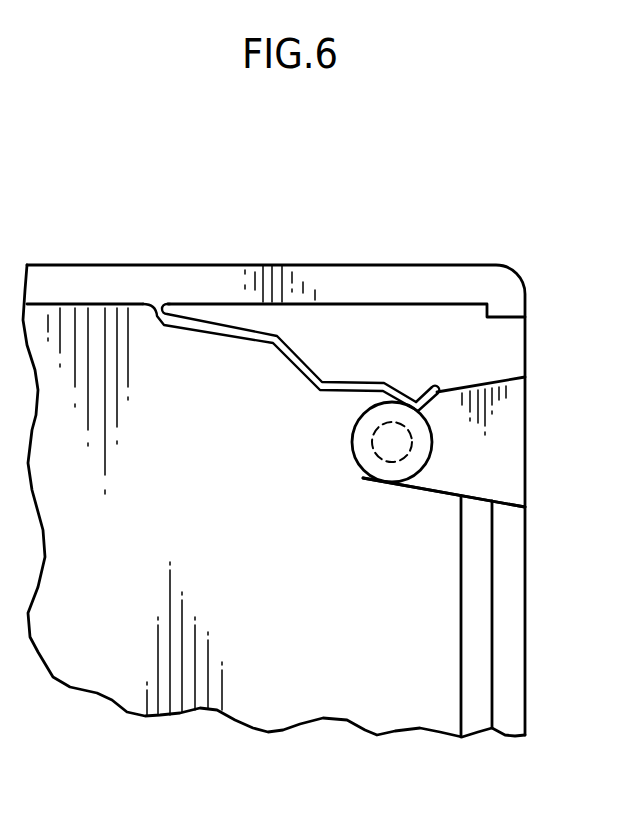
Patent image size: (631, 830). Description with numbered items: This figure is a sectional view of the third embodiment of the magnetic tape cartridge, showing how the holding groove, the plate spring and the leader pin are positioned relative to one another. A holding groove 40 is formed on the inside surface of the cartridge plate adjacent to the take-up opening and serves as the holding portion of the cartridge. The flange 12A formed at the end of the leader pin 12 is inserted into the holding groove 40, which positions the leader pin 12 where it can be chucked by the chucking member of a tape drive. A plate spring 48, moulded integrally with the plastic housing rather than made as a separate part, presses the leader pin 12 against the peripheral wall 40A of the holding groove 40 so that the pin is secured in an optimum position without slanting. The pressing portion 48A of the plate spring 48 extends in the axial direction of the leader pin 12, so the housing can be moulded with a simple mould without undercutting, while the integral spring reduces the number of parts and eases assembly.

The leader pin 12 is at (362, 481).
The flange 12A is at (433, 450).
The holding groove 40 is at (497, 407).
The peripheral wall 40A is at (437, 490).
The plate spring 48 is at (312, 383).
The pressing portion 48A is at (417, 393).